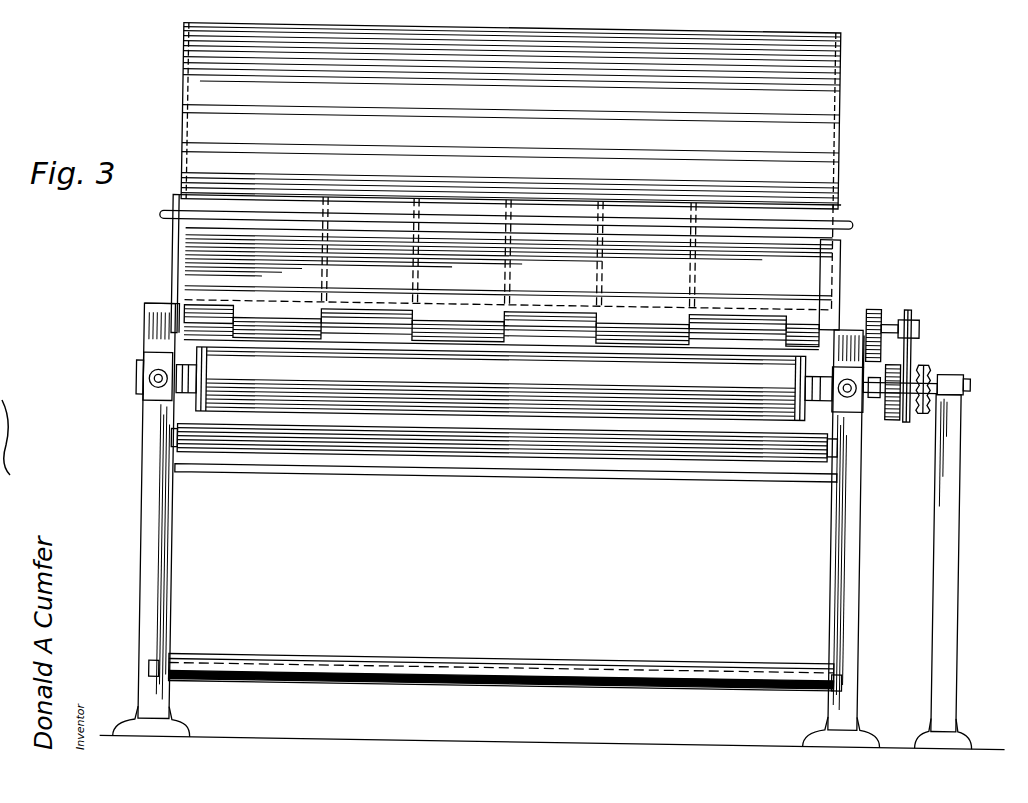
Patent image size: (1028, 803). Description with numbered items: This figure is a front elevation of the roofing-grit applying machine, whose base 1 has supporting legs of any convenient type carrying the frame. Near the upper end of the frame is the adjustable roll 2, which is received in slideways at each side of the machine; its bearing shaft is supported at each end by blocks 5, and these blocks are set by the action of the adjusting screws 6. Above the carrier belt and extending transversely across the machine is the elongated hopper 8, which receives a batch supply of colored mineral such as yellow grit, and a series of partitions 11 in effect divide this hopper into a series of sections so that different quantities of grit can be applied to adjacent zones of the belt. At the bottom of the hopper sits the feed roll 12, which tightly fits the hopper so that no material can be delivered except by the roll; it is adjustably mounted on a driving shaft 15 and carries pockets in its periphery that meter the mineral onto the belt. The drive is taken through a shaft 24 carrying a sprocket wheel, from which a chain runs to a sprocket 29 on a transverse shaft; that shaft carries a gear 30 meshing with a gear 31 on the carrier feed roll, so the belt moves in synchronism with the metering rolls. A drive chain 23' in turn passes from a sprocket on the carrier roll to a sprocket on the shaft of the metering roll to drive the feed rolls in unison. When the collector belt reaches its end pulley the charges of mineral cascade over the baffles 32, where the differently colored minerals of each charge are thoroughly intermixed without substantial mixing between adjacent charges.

The base 1 is at (858, 572).
The roll 2 is at (202, 406).
The blocks 5 is at (137, 366).
The adjusting screws 6 is at (150, 388).
The hopper 8 is at (511, 116).
The partitions 11 is at (323, 274).
The feed roll 12 is at (803, 325).
The driving shaft 15 is at (143, 311).
The drive chain 23' is at (915, 344).
The shaft 24 is at (910, 314).
The sprocket 29 is at (963, 376).
The gear 30 is at (872, 304).
The gear 31 is at (929, 368).
The baffles 32 is at (516, 466).